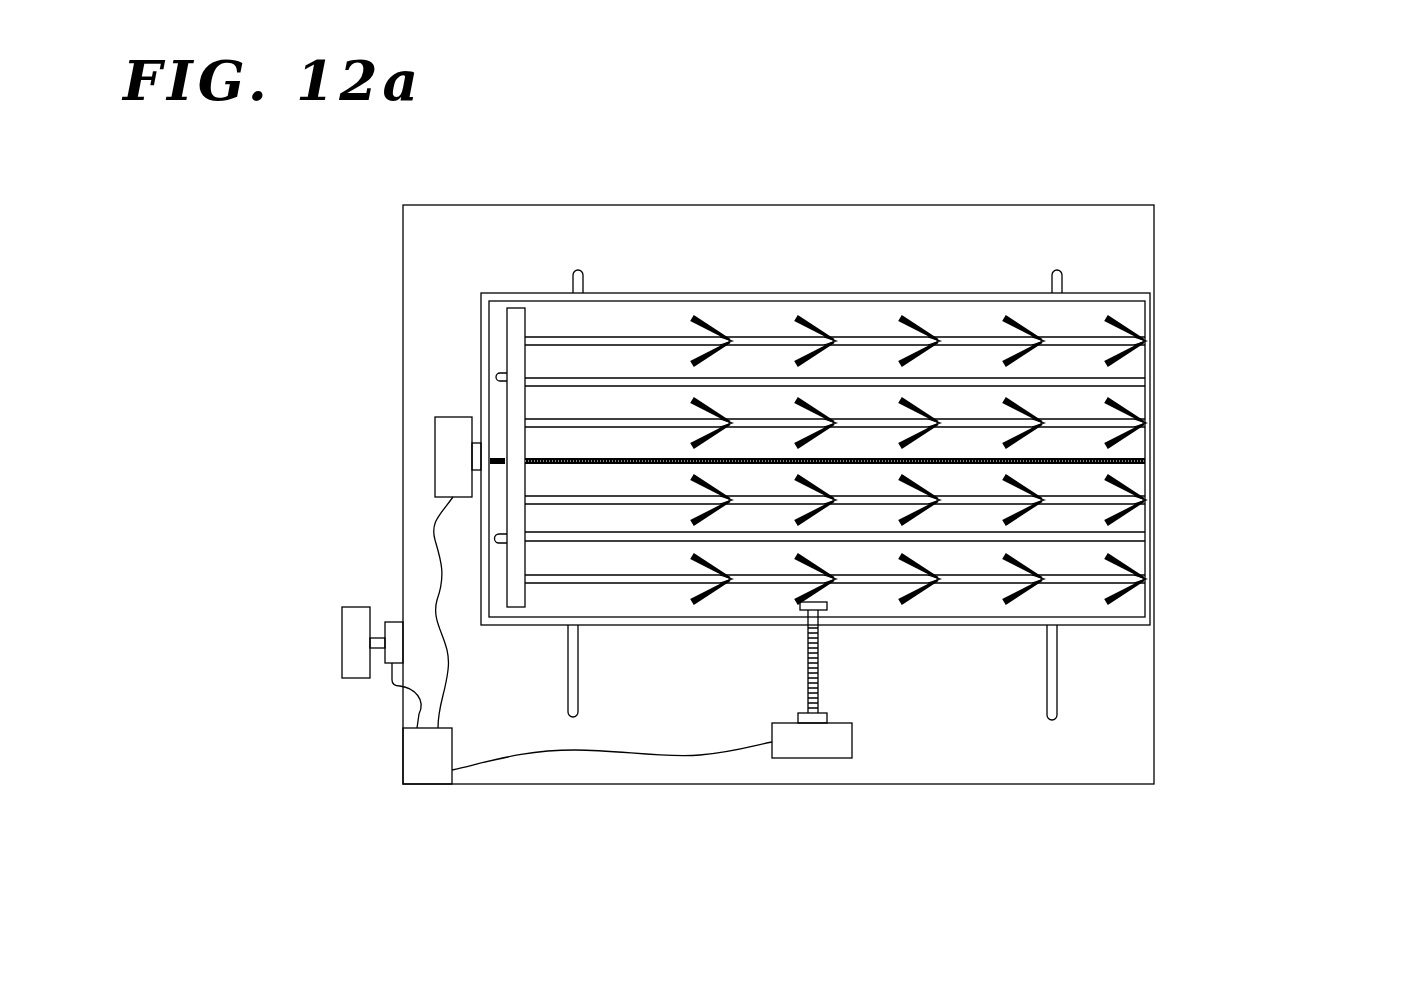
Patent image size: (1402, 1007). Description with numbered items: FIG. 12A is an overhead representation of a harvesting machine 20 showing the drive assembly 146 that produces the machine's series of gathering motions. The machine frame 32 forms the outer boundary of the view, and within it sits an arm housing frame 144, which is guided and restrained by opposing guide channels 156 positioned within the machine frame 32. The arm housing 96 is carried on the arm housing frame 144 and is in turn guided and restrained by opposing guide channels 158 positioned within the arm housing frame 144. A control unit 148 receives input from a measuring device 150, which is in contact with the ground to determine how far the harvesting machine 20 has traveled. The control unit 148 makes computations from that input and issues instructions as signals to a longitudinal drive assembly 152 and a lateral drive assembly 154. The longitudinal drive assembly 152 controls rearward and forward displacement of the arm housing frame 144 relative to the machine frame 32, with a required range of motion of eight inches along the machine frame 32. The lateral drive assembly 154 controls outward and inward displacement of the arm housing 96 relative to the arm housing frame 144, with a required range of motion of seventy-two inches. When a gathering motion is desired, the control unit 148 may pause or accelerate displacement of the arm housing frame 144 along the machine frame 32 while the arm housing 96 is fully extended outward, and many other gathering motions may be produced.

The harvesting machine 20 is at (1258, 138).
The machine frame 32 is at (609, 204).
The arm housing 96 is at (507, 353).
The arm housing frame 144 is at (812, 293).
The drive assembly 146 is at (265, 887).
The control unit 148 is at (423, 772).
The measuring device 150 is at (388, 620).
The longitudinal drive assembly 152 is at (852, 742).
The lateral drive assembly 154 is at (435, 452).
The guide channels 156 is at (1053, 668).
The guide channels 158 is at (628, 379).